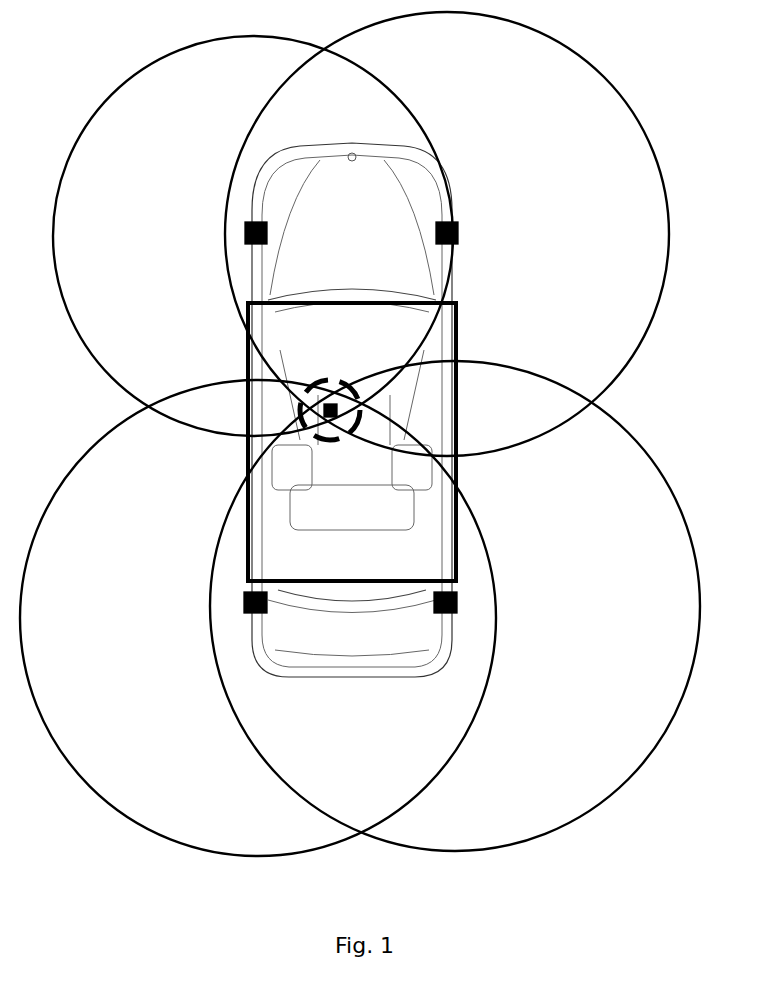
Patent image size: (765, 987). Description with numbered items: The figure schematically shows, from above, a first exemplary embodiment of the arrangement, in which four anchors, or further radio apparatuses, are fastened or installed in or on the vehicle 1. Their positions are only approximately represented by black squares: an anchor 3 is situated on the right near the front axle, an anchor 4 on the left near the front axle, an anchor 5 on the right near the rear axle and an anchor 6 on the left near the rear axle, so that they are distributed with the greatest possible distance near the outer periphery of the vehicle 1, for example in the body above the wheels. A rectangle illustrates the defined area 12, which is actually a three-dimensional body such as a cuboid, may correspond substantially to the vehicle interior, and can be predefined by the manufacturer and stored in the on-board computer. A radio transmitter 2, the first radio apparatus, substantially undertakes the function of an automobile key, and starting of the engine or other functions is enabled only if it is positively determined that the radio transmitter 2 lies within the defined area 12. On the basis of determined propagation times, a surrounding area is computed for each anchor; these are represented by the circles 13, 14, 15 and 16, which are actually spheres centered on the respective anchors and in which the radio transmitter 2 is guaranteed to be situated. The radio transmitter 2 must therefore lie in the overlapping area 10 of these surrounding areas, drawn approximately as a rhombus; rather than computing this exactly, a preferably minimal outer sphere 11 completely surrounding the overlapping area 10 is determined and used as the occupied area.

The vehicle 1 is at (410, 151).
The radio transmitter 2 is at (337, 403).
The anchor 3 is at (456, 220).
The anchor 4 is at (247, 226).
The anchor 5 is at (457, 603).
The anchor 6 is at (244, 603).
The overlapping area 10 is at (352, 425).
The outer sphere 11 is at (340, 382).
The defined area 12 is at (459, 431).
The surrounding area 13 is at (611, 80).
The surrounding area 14 is at (118, 90).
The surrounding area 15 is at (652, 458).
The surrounding area 16 is at (78, 450).